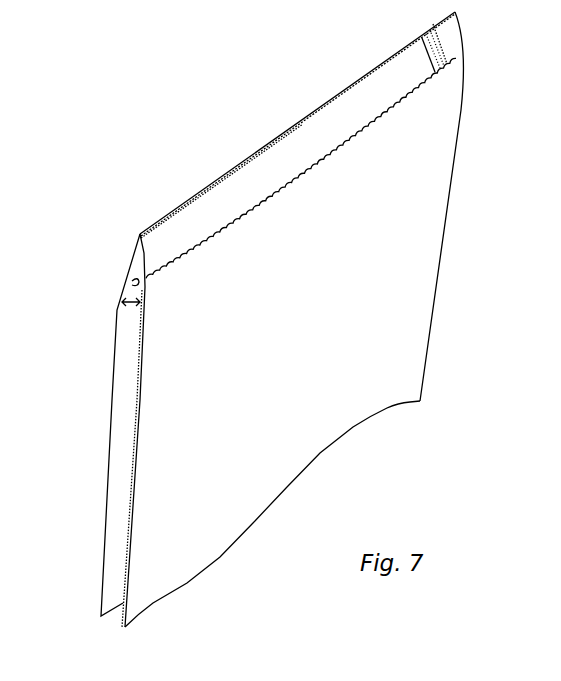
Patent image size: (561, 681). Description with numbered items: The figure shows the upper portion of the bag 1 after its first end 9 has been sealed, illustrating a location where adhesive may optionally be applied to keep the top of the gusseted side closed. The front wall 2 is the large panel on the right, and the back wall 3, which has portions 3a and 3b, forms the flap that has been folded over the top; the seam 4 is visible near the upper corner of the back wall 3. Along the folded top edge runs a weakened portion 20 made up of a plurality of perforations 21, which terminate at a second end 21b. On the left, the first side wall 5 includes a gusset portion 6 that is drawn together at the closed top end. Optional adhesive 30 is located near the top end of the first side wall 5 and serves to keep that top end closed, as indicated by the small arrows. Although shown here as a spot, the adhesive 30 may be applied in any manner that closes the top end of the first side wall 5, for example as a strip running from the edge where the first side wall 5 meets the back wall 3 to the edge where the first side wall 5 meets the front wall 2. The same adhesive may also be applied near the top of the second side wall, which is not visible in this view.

The bag 1 is at (230, 102).
The front wall 2 is at (420, 265).
The back wall 3 is at (371, 74).
The back wall portion 3a is at (168, 255).
The back wall portion 3b is at (456, 50).
The seam 4 is at (432, 32).
The first side wall 5 is at (123, 357).
The gusset portion 6 is at (130, 492).
The first end 9 is at (77, 246).
The weakened portion 20 is at (208, 197).
The perforations 21 is at (250, 162).
The second end 21b is at (303, 122).
The adhesive 30 is at (133, 283).